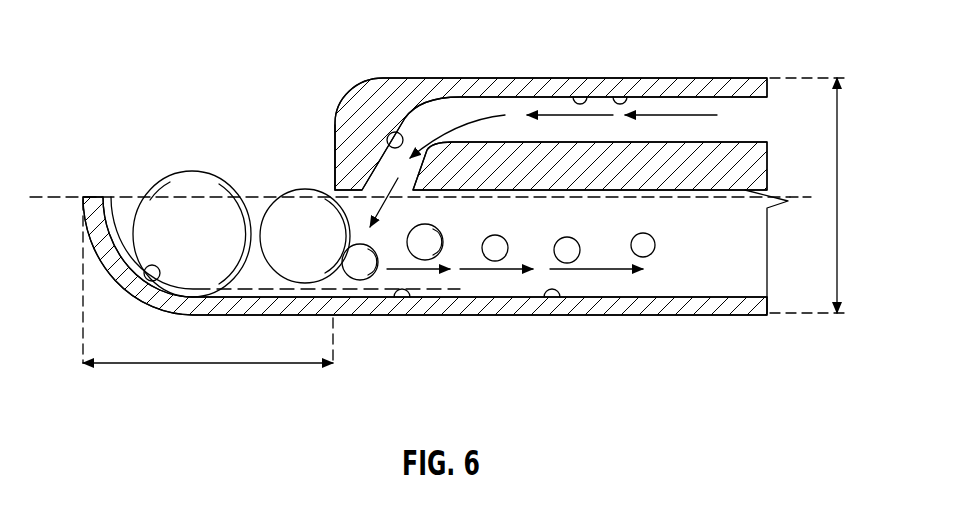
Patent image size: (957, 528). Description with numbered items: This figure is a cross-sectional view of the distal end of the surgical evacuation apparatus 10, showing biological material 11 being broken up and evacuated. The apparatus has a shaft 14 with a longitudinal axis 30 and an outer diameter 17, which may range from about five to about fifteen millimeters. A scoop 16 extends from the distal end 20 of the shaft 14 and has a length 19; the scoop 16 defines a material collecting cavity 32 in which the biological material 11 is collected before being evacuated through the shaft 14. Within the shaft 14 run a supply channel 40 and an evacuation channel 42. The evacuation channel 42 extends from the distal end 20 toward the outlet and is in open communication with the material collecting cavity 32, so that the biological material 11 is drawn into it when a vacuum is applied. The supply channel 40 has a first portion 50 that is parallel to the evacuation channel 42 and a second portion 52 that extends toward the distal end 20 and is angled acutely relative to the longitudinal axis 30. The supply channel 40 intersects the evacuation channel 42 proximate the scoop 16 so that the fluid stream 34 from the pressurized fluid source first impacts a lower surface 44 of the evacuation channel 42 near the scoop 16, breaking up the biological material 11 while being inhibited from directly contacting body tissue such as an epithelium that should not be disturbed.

The surgical evacuation apparatus 10 is at (148, 80).
The biological material 11 is at (192, 171).
The shaft 14 is at (692, 78).
The scoop 16 is at (95, 250).
The outer diameter 17 is at (838, 195).
The length 19 is at (223, 364).
The distal end 20 is at (335, 170).
The longitudinal axis 30 is at (788, 199).
The material collecting cavity 32 is at (157, 283).
The fluid stream 34 is at (483, 116).
The supply channel 40 is at (621, 90).
The evacuation channel 42 is at (552, 306).
The lower surface 44 is at (399, 306).
The first portion 50 is at (580, 90).
The second portion 52 is at (388, 143).